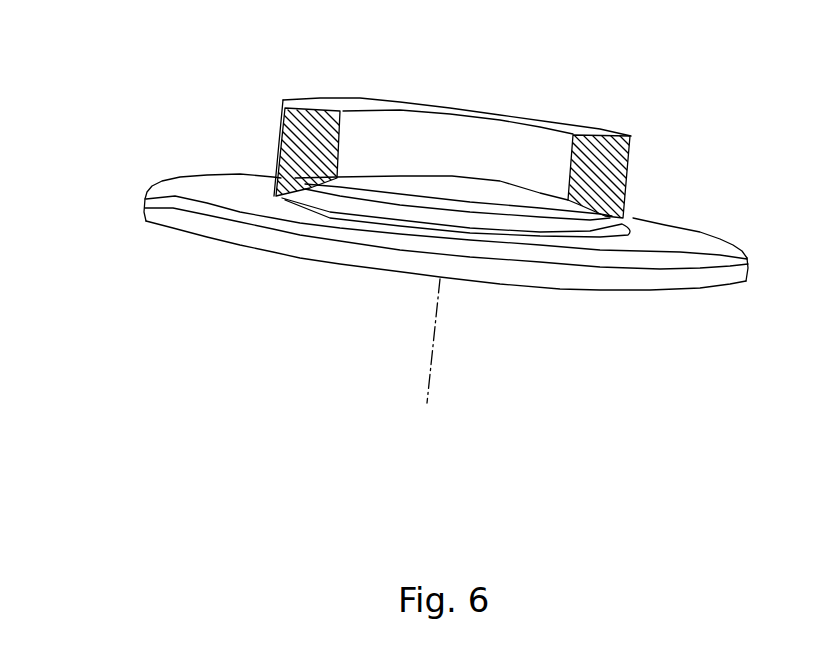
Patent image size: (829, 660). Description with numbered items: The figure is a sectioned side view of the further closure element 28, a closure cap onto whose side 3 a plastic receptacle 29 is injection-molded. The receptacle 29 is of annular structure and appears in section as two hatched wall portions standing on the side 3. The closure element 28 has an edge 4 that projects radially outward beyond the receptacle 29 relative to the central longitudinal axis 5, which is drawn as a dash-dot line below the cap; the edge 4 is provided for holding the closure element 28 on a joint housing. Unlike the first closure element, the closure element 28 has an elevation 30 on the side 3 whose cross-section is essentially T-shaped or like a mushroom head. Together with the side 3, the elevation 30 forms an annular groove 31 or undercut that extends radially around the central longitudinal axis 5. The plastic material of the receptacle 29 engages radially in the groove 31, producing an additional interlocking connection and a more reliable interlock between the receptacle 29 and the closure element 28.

The closure element 28 is at (183, 124).
The side 3 is at (223, 181).
The edge 4 is at (128, 213).
The receptacle 29 is at (636, 112).
The elevation 30 is at (462, 160).
The groove 31 is at (630, 204).
The central longitudinal axis 5 is at (440, 362).